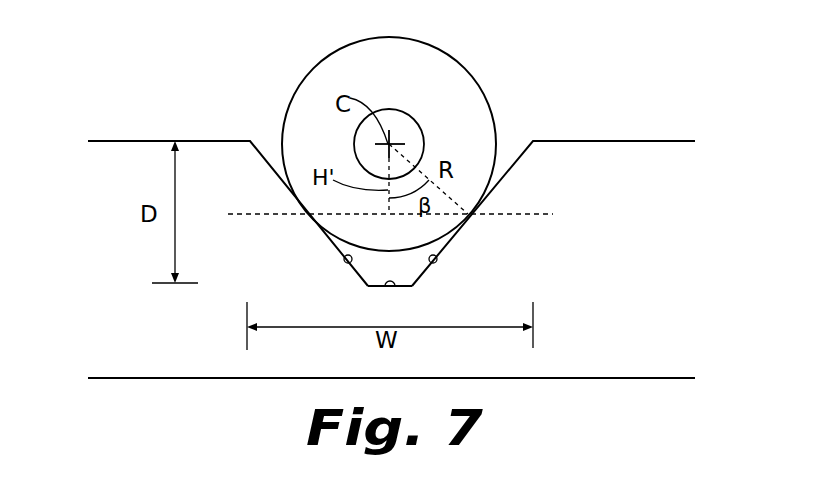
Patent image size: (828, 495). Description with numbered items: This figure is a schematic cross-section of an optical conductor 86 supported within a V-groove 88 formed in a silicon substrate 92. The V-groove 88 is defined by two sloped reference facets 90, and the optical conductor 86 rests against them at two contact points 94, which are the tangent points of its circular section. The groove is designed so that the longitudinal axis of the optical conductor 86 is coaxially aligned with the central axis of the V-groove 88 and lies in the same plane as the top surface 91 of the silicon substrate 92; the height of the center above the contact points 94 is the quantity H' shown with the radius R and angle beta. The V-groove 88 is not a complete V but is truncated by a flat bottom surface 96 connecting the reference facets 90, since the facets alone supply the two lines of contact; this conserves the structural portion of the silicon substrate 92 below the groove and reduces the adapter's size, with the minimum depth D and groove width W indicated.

The optical conductor 86 is at (460, 62).
The V-groove 88 is at (260, 126).
The reference facets 90 is at (346, 262).
The top surface 91 is at (652, 141).
The silicon substrate 92 is at (662, 263).
The contact points 94 is at (308, 216).
The bottom surface 96 is at (391, 286).